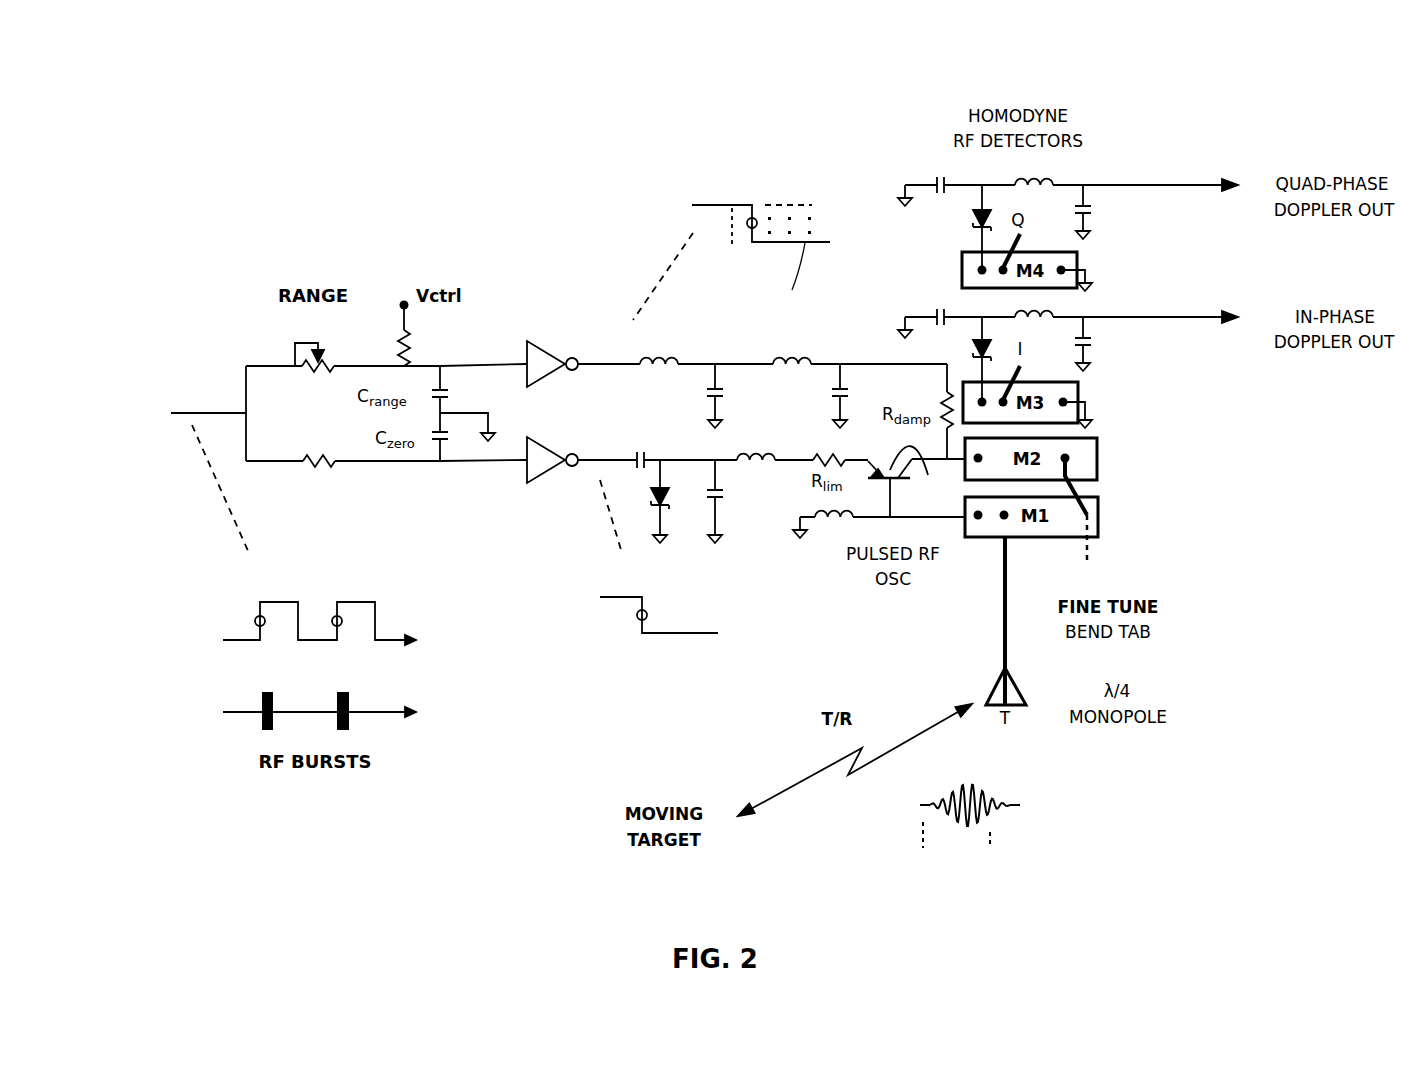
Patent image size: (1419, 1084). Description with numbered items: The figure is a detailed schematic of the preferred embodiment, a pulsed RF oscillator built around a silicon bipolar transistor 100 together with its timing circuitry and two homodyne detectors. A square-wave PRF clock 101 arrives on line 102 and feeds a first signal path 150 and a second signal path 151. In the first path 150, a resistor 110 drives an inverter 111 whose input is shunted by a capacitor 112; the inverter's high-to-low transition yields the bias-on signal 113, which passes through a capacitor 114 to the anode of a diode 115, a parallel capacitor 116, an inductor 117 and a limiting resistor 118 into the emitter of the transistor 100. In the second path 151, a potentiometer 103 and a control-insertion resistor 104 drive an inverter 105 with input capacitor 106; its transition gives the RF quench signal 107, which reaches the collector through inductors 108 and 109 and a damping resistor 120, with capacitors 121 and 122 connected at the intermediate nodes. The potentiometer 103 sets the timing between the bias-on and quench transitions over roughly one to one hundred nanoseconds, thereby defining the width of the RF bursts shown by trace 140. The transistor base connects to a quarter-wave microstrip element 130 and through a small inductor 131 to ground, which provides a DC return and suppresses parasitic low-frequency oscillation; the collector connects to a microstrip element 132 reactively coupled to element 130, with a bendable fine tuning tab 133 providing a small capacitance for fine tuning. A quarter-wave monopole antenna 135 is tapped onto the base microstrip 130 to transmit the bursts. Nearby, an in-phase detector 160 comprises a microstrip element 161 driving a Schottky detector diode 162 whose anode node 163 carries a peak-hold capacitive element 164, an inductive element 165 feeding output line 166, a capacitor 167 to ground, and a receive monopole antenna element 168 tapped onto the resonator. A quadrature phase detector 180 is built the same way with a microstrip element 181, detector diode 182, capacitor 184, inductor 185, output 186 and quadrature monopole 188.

The silicon bipolar transistor 100 is at (911, 481).
The PRF clock 101 is at (380, 600).
The clock line 102 is at (199, 401).
The potentiometer 103 is at (322, 378).
The resistor 104 is at (412, 340).
The inverter 105 is at (542, 345).
The capacitor 106 is at (450, 394).
The RF quench signal 107 is at (700, 195).
The inductor 108 is at (652, 355).
The inductor 109 is at (787, 355).
The resistor 110 is at (322, 453).
The inverter 111 is at (553, 485).
The capacitor 112 is at (447, 447).
The bias-on signal 113 is at (633, 630).
The capacitor 114 is at (638, 447).
The diode 115 is at (678, 510).
The capacitor 116 is at (725, 492).
The inductor 117 is at (762, 456).
The limiting resistor 118 is at (810, 465).
The damping resistor 120 is at (943, 403).
The capacitor 121 is at (722, 397).
The capacitor 122 is at (830, 390).
The microstrip element 130 is at (1098, 540).
The inductor 131 is at (818, 538).
The microstrip element 132 is at (1100, 440).
The fine tuning tab 133 is at (1072, 490).
The monopole antenna 135 is at (1001, 600).
The RF burst trace 140 is at (980, 780).
The first signal path 150 is at (342, 487).
The second signal path 151 is at (250, 334).
The in-phase detector 160 is at (1173, 354).
The microstrip element 161 is at (1085, 390).
The detector diode 162 is at (980, 322).
The node 163 is at (980, 316).
The capacitive element 164 is at (943, 300).
The inductive element 165 is at (1040, 306).
The output line 166 is at (1180, 317).
The capacitor 167 is at (1097, 340).
The monopole antenna element 168 is at (1022, 375).
The quadrature phase detector 180 is at (1258, 150).
The microstrip element 181 is at (1082, 260).
The detector diode 182 is at (998, 208).
The capacitor 184 is at (928, 180).
The inductor 185 is at (1060, 178).
The output 186 is at (1160, 185).
The quadrature monopole 188 is at (1022, 243).